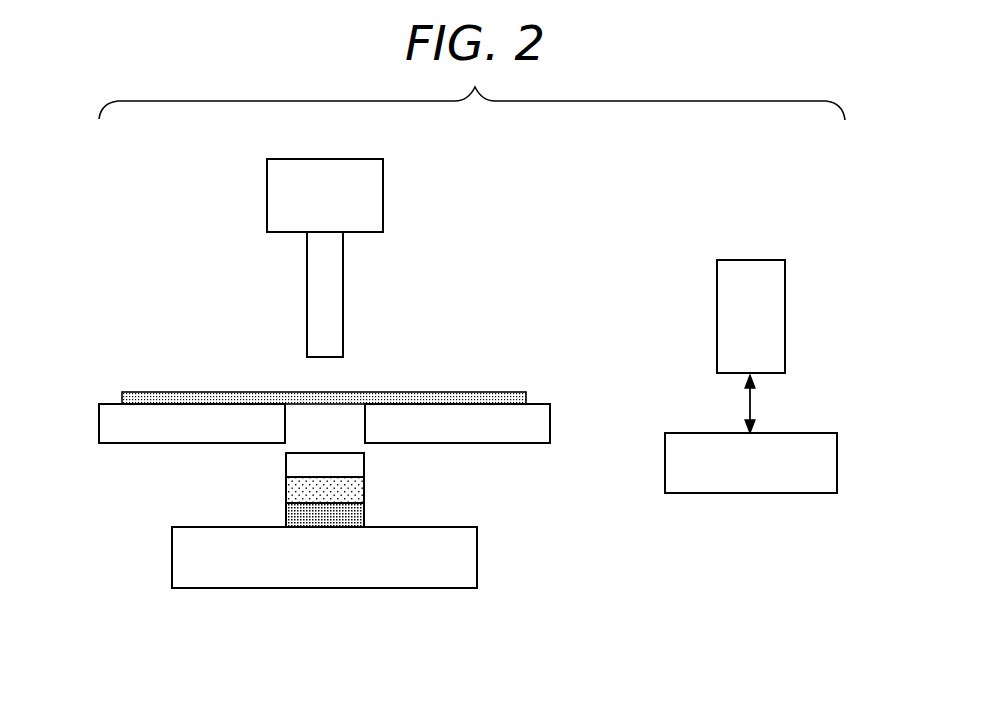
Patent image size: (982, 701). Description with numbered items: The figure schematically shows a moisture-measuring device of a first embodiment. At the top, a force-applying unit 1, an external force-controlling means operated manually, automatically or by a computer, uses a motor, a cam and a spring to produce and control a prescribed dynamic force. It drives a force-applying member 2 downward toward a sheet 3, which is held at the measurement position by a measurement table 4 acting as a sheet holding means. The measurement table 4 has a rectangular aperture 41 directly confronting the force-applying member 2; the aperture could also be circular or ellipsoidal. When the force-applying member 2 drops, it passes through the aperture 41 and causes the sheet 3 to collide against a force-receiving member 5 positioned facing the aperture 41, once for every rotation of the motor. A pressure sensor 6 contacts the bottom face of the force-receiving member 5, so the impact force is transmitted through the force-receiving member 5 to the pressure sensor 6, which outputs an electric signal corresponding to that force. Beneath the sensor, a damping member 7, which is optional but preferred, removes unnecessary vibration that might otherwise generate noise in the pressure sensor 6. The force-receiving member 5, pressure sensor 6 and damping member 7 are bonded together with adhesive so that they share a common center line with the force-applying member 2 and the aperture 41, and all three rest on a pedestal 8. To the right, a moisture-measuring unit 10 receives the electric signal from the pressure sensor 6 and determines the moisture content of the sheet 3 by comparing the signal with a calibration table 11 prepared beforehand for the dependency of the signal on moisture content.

The force-applying unit 1 is at (373, 182).
The force-applying member 2 is at (337, 293).
The sheet 3 is at (482, 396).
The measurement table 4 is at (542, 420).
The aperture 41 is at (333, 428).
The force-receiving member 5 is at (357, 465).
The pressure sensor 6 is at (292, 490).
The damping member 7 is at (357, 513).
The pedestal 8 is at (409, 582).
The moisture-measuring unit 10 is at (777, 289).
The calibration table 11 is at (807, 433).